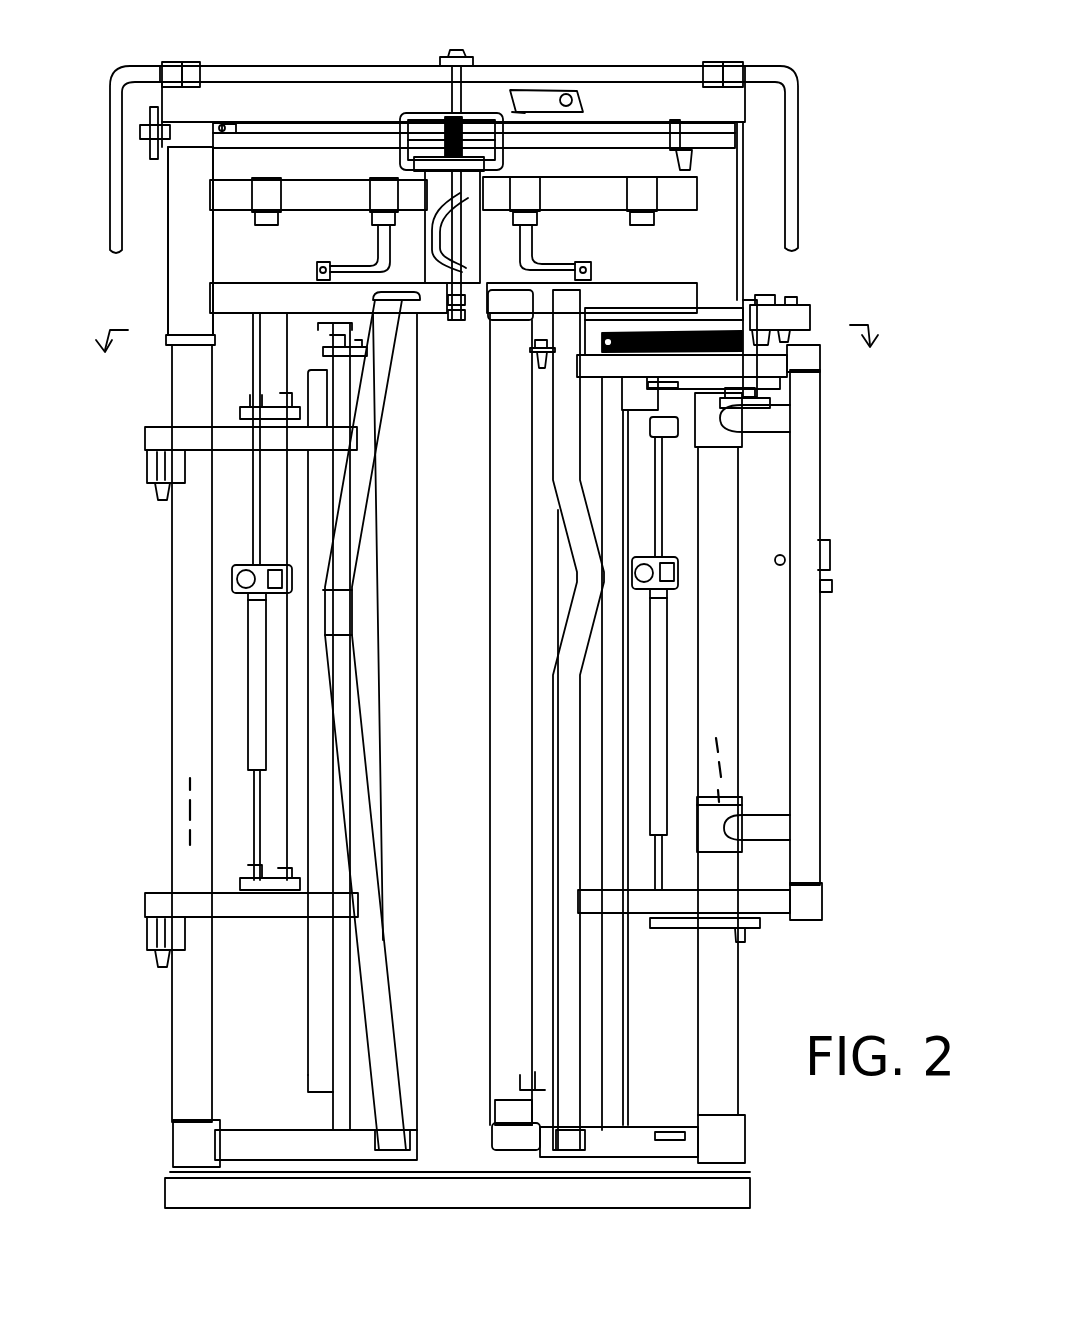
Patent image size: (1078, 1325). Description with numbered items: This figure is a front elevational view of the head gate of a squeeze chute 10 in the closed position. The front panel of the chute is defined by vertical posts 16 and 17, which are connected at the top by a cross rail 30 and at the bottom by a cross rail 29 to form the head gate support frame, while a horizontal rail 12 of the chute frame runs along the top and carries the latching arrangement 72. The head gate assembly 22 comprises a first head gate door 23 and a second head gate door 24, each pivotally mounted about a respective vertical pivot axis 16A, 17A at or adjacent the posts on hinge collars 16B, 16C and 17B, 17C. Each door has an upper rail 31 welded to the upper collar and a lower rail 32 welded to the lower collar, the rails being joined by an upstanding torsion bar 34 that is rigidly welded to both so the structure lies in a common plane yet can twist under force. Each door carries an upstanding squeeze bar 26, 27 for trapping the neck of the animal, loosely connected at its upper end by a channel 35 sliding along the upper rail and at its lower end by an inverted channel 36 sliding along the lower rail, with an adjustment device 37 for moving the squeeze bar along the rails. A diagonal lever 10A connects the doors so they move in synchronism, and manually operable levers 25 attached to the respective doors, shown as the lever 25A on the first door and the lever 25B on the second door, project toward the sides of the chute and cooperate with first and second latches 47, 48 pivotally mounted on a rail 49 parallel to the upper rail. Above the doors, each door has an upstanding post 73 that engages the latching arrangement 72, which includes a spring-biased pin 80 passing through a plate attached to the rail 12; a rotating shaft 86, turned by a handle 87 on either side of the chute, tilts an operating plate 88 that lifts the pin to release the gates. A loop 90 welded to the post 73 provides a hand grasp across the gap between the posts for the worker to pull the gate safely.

The squeeze chute 10 is at (145, 600).
The diagonal lever 10A is at (642, 136).
The horizontal rail 12 is at (626, 92).
The vertical post 16 is at (178, 752).
The pivot axis 16A is at (190, 815).
The hinge collar 16B is at (190, 1147).
The hinge collar 16C is at (178, 278).
The vertical post 17 is at (710, 712).
The pivot axis 17A is at (727, 765).
The hinge collar 17B is at (727, 1143).
The hinge collar 17C is at (725, 270).
The head gate assembly 22 is at (235, 1035).
The first head gate door 23 is at (390, 856).
The second head gate door 24 is at (522, 765).
The base plate 25 is at (342, 1192).
The lever 25A is at (258, 660).
The lever 25B is at (657, 660).
The squeeze bar 26 is at (400, 578).
The squeeze bar 27 is at (507, 625).
The cross rail 29 is at (405, 1190).
The cross rail 30 is at (380, 95).
The upper rail 31 is at (280, 295).
The lower rail 32 is at (250, 1140).
The torsion bar 34 is at (272, 1050).
The channel 35 is at (405, 305).
The inverted channel 36 is at (525, 1130).
The adjustment device 37 is at (323, 252).
The first latch 47 is at (268, 178).
The second latch 48 is at (378, 190).
The rail 49 is at (222, 198).
The latching arrangement 72 is at (480, 100).
The upstanding post 73 is at (470, 205).
The pin 80 is at (445, 101).
The rotating shaft 86 is at (594, 77).
The handle 87 is at (118, 170).
The operating plate 88 is at (456, 60).
The loop 90 is at (435, 242).